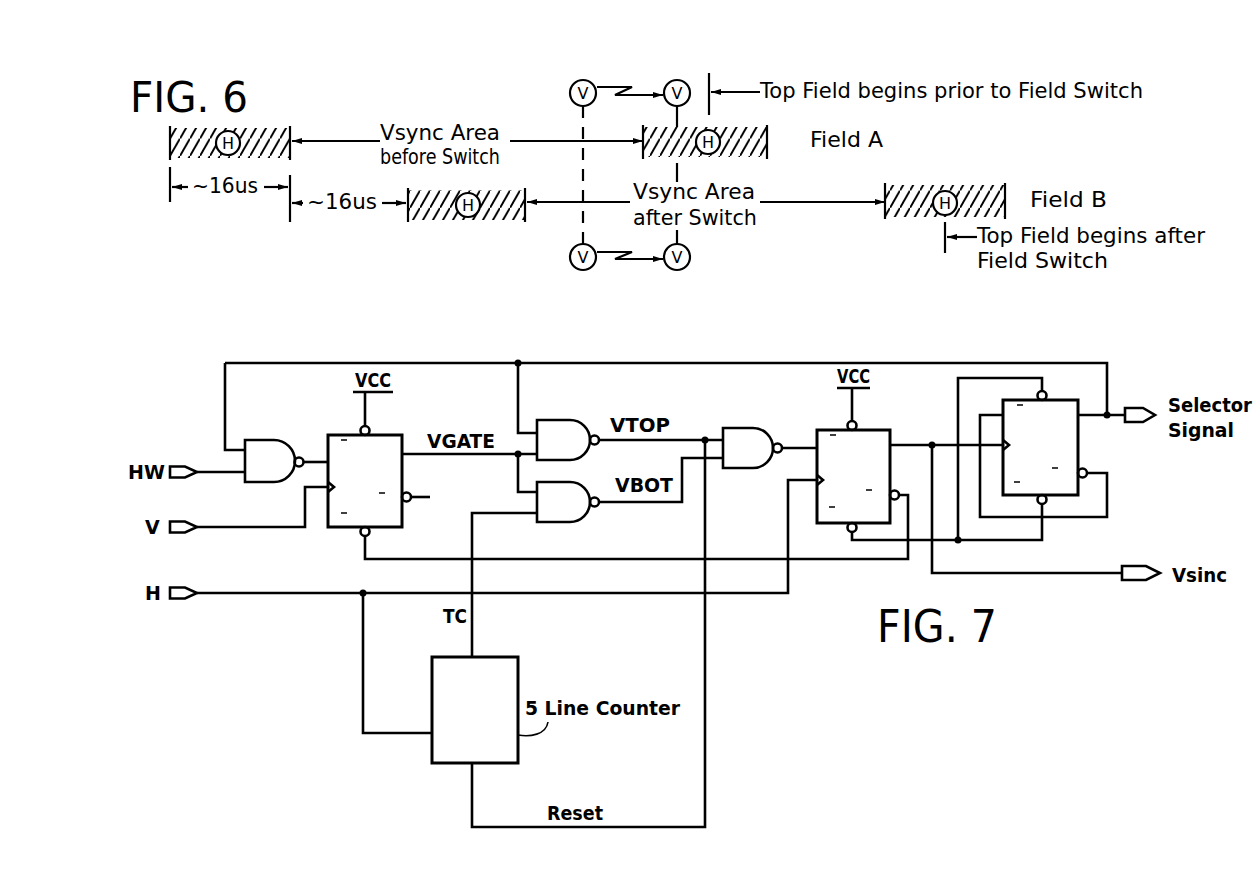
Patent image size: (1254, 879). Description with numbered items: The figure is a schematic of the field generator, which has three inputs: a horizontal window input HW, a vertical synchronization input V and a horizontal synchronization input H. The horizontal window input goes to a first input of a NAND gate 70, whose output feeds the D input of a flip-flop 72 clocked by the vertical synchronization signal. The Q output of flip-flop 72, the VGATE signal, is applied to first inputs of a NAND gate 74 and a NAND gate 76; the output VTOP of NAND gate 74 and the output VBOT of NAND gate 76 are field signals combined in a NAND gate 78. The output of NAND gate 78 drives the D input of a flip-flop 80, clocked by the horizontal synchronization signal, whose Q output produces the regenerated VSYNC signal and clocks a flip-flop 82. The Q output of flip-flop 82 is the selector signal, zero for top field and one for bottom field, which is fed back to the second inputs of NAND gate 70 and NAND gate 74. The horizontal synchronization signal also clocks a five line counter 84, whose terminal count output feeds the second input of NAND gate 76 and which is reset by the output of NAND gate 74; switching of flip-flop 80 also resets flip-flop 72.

The NAND gate 70 is at (256, 471).
The flip-flop 72 is at (344, 434).
The NAND gate 74 is at (551, 455).
The NAND gate 76 is at (551, 516).
The NAND gate 78 is at (735, 458).
The flip-flop 80 is at (836, 430).
The flip-flop 82 is at (1051, 396).
The five line counter 84 is at (511, 657).